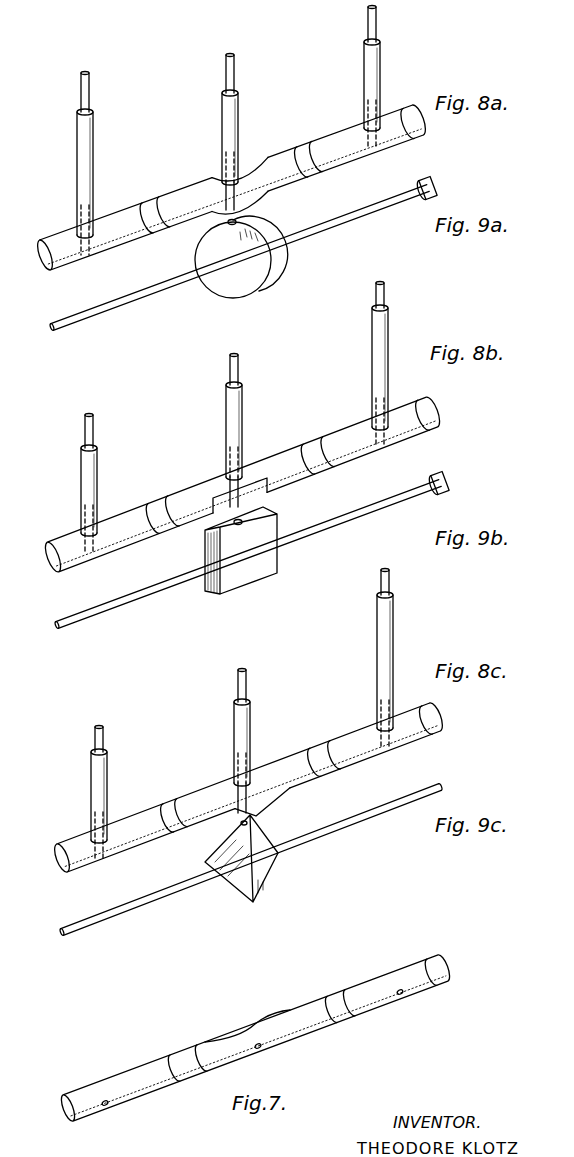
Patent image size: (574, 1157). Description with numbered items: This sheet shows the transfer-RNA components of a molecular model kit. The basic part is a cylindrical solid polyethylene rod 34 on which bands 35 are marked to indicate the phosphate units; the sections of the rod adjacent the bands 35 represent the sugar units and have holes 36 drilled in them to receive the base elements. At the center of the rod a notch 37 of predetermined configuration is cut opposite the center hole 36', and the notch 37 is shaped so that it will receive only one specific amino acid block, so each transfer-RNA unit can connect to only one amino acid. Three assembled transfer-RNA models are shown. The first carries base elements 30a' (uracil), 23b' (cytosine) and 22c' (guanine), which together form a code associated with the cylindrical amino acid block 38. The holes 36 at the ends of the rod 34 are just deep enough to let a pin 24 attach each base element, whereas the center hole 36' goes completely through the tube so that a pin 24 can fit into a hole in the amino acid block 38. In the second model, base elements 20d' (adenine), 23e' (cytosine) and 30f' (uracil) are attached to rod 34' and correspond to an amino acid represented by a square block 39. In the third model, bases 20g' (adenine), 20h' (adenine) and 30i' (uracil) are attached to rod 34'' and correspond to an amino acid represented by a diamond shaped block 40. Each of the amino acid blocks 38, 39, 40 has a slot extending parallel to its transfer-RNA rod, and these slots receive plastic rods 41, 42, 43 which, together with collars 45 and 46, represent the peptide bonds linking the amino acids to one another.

In FIG. 8A, the pin 24 is at (80, 76).
In FIG. 8B, the pin 24 is at (84, 430).
In FIG. 8C, the pin 24 is at (94, 740).
In FIG. 8A, the base element (uracil) 30a' is at (58, 173).
In FIG. 8A, the base element (cytosine) 23b' is at (205, 137).
In FIG. 8A, the base element (guanine) 22c' is at (344, 85).
In FIG. 8A, the bands 35 is at (148, 232).
In FIG. 8B, the bands 35 is at (166, 536).
In FIG. 8C, the bands 35 is at (182, 837).
In FIG. 7, the bands 35 is at (175, 1056).
In FIG. 8A, the transfer-RNA rod 34 is at (232, 202).
In FIG. 7, the transfer-RNA rod 34 is at (255, 1052).
In FIG. 9A, the plastic rod 41 is at (150, 303).
In FIG. 9A, the collar 45 is at (427, 199).
In FIG. 9A, the cylindrical amino acid block 38 is at (268, 270).
In FIG. 8B, the base element (uracil) 30f' is at (353, 367).
In FIG. 8B, the base element (cytosine) 23e' is at (251, 431).
In FIG. 8B, the base element (adenine) 20d' is at (105, 490).
In FIG. 8B, the transfer-RNA rod 34' is at (242, 491).
In FIG. 9B, the plastic rod 42 is at (136, 598).
In FIG. 9B, the collar 46 is at (439, 496).
In FIG. 9B, the square amino acid block 39 is at (268, 582).
In FIG. 8C, the base element (uracil) 30i' is at (361, 661).
In FIG. 8C, the base element (adenine) 20h' is at (221, 742).
In FIG. 8C, the base element (adenine) 20g' is at (74, 796).
In FIG. 8C, the transfer-RNA rod 34'' is at (249, 803).
In FIG. 9C, the plastic rod 43 is at (178, 895).
In FIG. 9C, the diamond shaped amino acid block 40 is at (262, 878).
In FIG. 7, the holes 36 is at (252, 1062).
In FIG. 7, the center hole 36' is at (274, 1061).
In FIG. 7, the notch 37 is at (248, 1032).